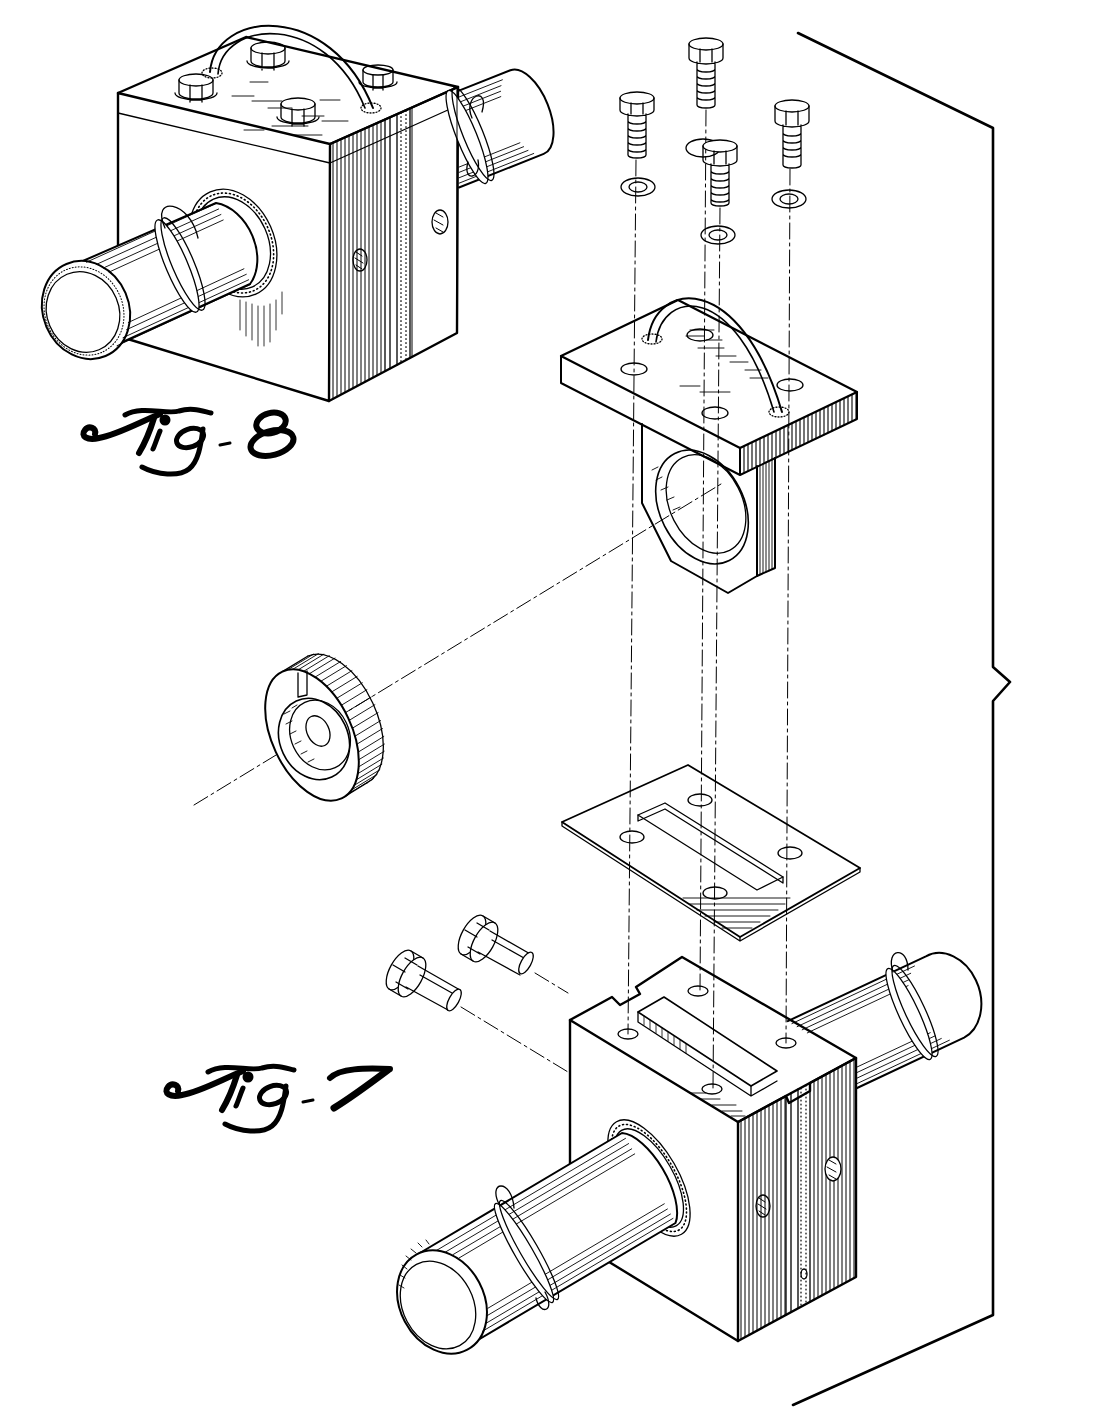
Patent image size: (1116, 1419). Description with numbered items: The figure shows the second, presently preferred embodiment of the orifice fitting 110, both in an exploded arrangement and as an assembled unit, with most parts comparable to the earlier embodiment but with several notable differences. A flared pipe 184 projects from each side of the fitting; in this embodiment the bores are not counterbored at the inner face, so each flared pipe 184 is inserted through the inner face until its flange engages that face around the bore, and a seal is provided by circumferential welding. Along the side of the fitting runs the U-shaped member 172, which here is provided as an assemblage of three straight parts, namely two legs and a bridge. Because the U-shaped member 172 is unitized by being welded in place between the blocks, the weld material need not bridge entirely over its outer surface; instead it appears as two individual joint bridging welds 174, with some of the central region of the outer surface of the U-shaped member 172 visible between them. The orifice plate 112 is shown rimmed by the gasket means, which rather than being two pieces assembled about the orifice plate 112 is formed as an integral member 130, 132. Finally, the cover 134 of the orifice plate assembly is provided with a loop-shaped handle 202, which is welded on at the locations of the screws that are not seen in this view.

In FIG. 8, the orifice fitting 110 is at (463, 72).
In FIG. 7, the orifice plate 112 is at (328, 767).
In FIG. 7, the integral gasket member 130 is at (366, 742).
In FIG. 7, the integral gasket member 132 is at (366, 742).
In FIG. 7, the cover 134 is at (658, 395).
In FIG. 8, the U-shaped member 172 is at (397, 303).
In FIG. 7, the U-shaped member 172 is at (799, 1281).
In FIG. 8, the joint bridging welds 174 is at (403, 354).
In FIG. 7, the joint bridging welds 174 is at (822, 1284).
In FIG. 8, the flared pipe 184 is at (494, 171).
In FIG. 7, the flared pipe 184 is at (838, 1013).
In FIG. 8, the loop-shaped handle 202 is at (345, 63).
In FIG. 7, the loop-shaped handle 202 is at (735, 317).